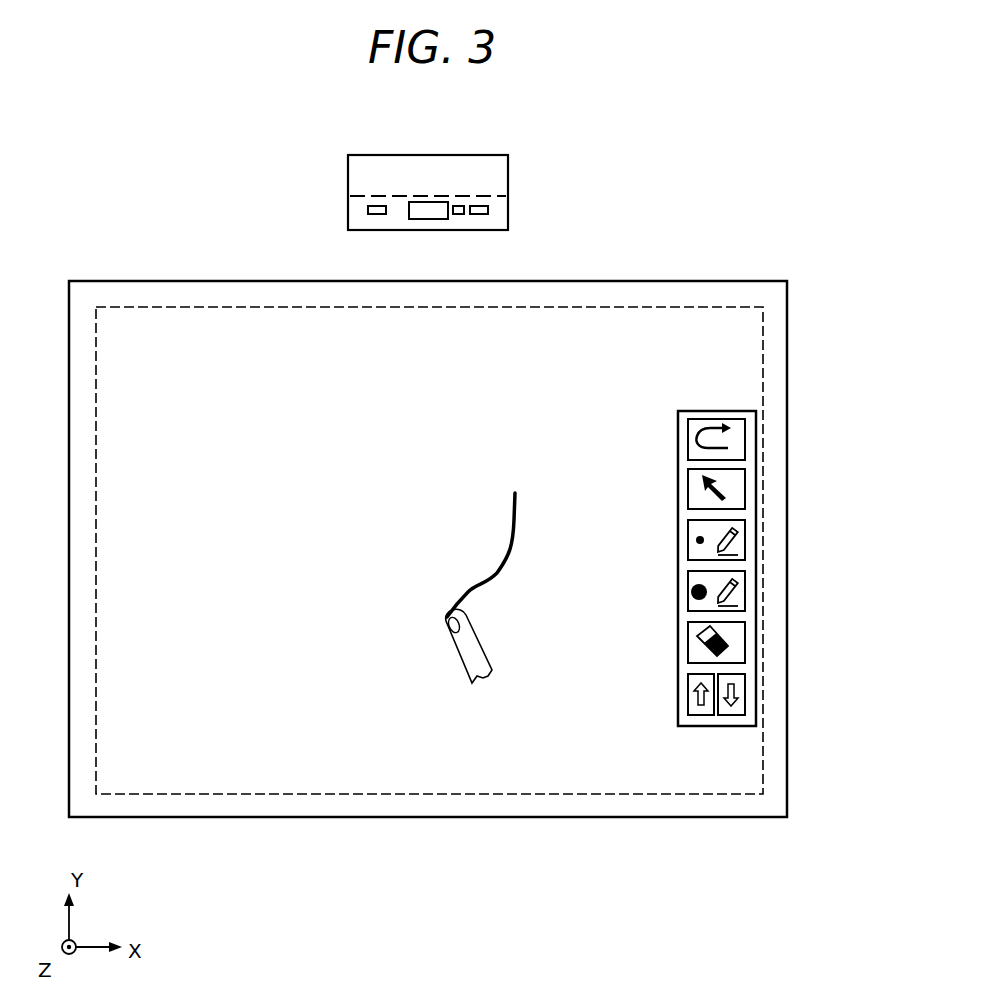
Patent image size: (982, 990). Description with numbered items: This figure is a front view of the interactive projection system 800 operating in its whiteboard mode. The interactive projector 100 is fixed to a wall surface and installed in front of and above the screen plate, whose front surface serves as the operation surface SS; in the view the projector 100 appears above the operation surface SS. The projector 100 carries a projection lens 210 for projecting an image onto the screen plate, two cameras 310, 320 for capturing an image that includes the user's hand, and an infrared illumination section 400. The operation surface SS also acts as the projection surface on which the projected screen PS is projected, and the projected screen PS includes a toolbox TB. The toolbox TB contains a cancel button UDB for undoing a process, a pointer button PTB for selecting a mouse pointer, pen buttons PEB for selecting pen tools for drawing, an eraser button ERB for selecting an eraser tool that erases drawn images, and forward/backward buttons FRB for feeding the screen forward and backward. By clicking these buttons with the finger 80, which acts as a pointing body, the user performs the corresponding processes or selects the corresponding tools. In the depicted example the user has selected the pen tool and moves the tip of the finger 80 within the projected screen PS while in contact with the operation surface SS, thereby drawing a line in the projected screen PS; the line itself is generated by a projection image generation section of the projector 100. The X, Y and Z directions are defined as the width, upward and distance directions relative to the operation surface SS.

The interactive projection system 800 is at (757, 174).
The interactive projector 100 is at (508, 173).
The projection lens 210 is at (427, 200).
The infrared illumination section 400 is at (455, 206).
The camera 310 is at (377, 215).
The camera 320 is at (480, 215).
The operation surface SS is at (136, 290).
The projected screen PS is at (222, 307).
The finger 80 is at (453, 653).
The toolbox TB is at (696, 411).
The cancel button UDB is at (687, 437).
The pointer button PTB is at (687, 487).
The pen buttons PEB is at (687, 537).
The eraser button ERB is at (687, 637).
The forward/backward buttons FRB is at (720, 685).